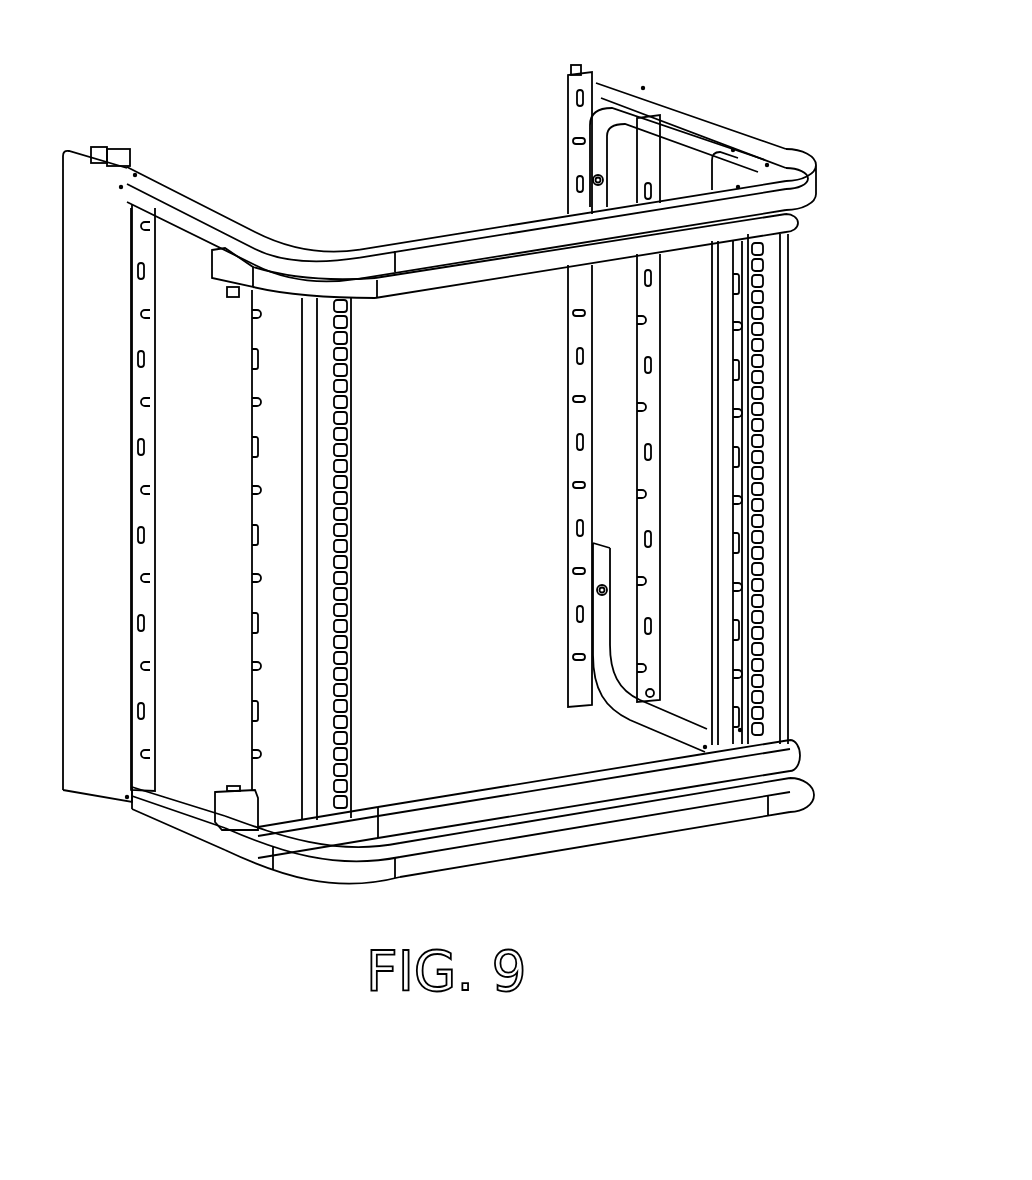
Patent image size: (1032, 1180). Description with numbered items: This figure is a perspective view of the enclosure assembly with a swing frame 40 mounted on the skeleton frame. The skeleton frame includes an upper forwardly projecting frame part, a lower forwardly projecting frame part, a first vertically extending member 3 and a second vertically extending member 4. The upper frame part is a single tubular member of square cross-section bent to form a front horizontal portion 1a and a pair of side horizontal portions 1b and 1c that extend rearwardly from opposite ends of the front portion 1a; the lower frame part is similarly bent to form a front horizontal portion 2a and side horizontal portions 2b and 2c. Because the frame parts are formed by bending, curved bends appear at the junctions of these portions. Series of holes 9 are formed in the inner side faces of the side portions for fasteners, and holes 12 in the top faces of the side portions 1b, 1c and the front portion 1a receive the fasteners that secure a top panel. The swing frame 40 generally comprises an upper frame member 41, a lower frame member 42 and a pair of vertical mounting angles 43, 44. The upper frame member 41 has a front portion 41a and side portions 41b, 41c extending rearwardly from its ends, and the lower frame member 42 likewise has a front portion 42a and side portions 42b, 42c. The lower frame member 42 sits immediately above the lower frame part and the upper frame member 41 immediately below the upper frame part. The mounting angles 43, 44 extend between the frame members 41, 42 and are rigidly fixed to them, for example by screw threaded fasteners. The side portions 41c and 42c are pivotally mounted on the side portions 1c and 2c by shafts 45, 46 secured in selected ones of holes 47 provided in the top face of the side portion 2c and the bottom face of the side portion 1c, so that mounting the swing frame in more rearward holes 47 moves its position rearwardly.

The front horizontal portion 1a is at (467, 237).
The side horizontal portion 1b is at (772, 148).
The side horizontal portion 1c is at (202, 202).
The front horizontal portion 2a is at (597, 840).
The side horizontal portion 2b is at (632, 712).
The side horizontal portion 2c is at (247, 853).
The first vertically extending member 3 is at (617, 340).
The second vertically extending member 4 is at (117, 516).
The holes 9 is at (703, 137).
The holes 12 is at (402, 243).
The swing frame 40 is at (514, 483).
The upper frame member 41 is at (485, 213).
The front portion 41a is at (517, 267).
The side portion 41b is at (708, 148).
The side portion 41c is at (221, 266).
The lower frame member 42 is at (481, 811).
The front portion 42a is at (413, 818).
The side portion 42b is at (711, 753).
The side portion 42c is at (220, 805).
The vertical mounting angle 43 is at (773, 457).
The vertical mounting angle 44 is at (330, 550).
The shaft 45 is at (230, 297).
The shaft 46 is at (231, 786).
The holes 47 is at (210, 820).